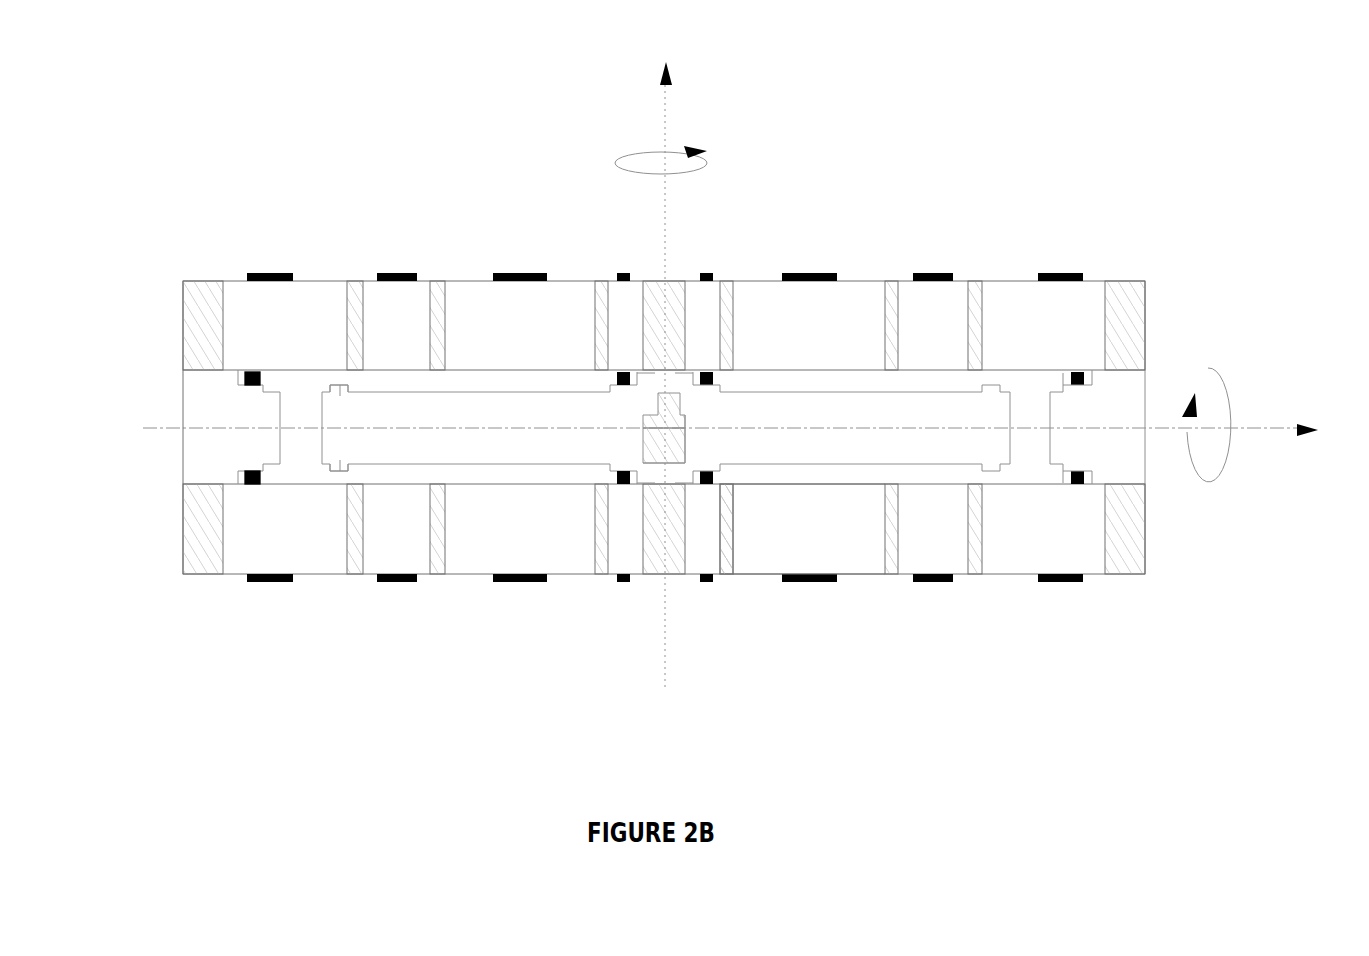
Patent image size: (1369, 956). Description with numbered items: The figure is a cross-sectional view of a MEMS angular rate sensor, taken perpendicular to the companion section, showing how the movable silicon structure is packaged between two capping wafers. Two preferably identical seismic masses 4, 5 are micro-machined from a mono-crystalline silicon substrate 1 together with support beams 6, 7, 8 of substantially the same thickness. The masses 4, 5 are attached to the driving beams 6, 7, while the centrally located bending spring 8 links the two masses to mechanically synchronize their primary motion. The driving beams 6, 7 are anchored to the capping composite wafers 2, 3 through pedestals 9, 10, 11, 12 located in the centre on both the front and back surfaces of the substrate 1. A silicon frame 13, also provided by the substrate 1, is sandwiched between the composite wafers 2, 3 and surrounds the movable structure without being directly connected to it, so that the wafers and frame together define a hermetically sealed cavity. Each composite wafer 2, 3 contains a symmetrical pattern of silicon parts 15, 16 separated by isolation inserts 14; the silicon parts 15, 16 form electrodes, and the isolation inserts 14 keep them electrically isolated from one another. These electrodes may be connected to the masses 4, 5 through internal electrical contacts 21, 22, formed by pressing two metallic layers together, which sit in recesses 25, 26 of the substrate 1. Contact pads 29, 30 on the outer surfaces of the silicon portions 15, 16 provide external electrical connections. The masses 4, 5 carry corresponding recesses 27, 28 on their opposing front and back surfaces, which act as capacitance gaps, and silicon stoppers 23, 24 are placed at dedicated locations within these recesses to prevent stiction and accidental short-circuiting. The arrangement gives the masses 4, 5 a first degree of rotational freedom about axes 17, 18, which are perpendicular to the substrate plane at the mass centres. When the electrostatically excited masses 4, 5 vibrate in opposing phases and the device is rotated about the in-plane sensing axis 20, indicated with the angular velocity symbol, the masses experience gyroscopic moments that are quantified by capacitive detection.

The mono-crystalline silicon substrate 1 is at (168, 443).
The first composite wafer 2 is at (168, 319).
The second composite wafer 3 is at (168, 533).
The seismic mass 4 is at (488, 277).
The seismic mass 5 is at (478, 417).
The driving beam 6 is at (758, 321).
The driving beam 7 is at (664, 439).
The bending spring 8 is at (687, 420).
The pedestal 9 is at (592, 303).
The pedestal 10 is at (658, 385).
The pedestal 11 is at (592, 553).
The pedestal 12 is at (657, 465).
The silicon frame 13 is at (1132, 408).
The isolation insert 14 is at (725, 565).
The silicon part 15 is at (1097, 297).
The silicon part 16 is at (863, 563).
The axis 17 is at (603, 370).
The axis 18 is at (665, 132).
The sensing axis 20 is at (1255, 433).
The internal electrical contact 21 is at (250, 372).
The internal electrical contact 22 is at (250, 484).
The silicon stopper 23 is at (343, 385).
The silicon stopper 24 is at (342, 484).
The recess 25 is at (1067, 372).
The recess 26 is at (1067, 484).
The recess 27 is at (945, 390).
The recess 28 is at (857, 465).
The contact pad 29 is at (402, 274).
The contact pad 30 is at (402, 580).